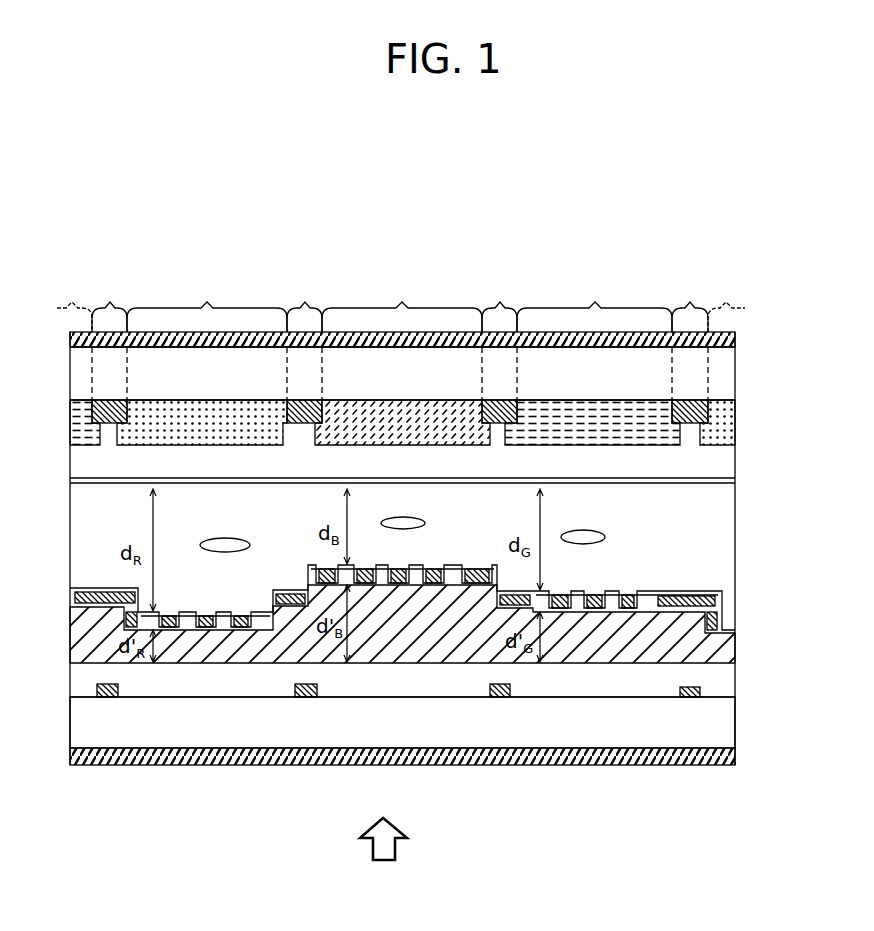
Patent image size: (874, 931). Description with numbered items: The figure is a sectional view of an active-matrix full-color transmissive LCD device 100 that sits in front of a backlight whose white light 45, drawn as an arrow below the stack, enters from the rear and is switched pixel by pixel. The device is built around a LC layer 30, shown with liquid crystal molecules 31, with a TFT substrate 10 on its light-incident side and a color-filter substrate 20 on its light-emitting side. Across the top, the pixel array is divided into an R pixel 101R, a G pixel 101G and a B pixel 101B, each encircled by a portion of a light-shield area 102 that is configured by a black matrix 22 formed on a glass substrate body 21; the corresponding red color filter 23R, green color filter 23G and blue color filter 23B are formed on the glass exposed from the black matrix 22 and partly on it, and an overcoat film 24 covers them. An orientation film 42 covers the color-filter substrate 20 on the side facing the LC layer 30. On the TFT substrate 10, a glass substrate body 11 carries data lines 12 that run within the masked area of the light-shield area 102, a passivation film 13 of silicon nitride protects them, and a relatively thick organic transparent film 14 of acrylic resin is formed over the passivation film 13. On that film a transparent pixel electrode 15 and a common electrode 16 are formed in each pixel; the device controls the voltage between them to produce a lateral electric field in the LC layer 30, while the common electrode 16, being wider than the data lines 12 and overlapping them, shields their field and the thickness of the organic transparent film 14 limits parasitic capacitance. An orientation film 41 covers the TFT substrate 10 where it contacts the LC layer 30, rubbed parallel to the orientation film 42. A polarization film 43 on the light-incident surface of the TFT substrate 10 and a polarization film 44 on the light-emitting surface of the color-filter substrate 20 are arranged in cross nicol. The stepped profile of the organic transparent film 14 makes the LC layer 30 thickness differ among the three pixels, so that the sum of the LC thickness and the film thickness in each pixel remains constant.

The LCD device 100 is at (665, 149).
The B pixel 101B is at (248, 305).
The R pixel 101R is at (459, 305).
The G pixel 101G is at (594, 305).
The light-shield area 102 is at (401, 339).
The polarization film 44 is at (735, 340).
The glass substrate body 21 is at (722, 385).
The black matrix 22 is at (735, 425).
The red color filter 23R is at (160, 435).
The blue color filter 23B is at (355, 435).
The green color filter 23G is at (548, 437).
The overcoat film 24 is at (722, 470).
The color-filter substrate 20 is at (808, 355).
The orientation film 42 is at (710, 483).
The LC layer 30 is at (722, 540).
The liquid crystal molecule 31 is at (586, 532).
The pixel electrode 15 is at (678, 591).
The common electrode 16 is at (637, 562).
The orientation film 41 is at (715, 591).
The organic transparent film 14 is at (723, 645).
The passivation film 13 is at (720, 675).
The data line 12 is at (700, 692).
The glass substrate body 11 is at (722, 730).
The TFT substrate 10 is at (808, 632).
The polarization film 43 is at (735, 762).
The white light 45 is at (397, 852).